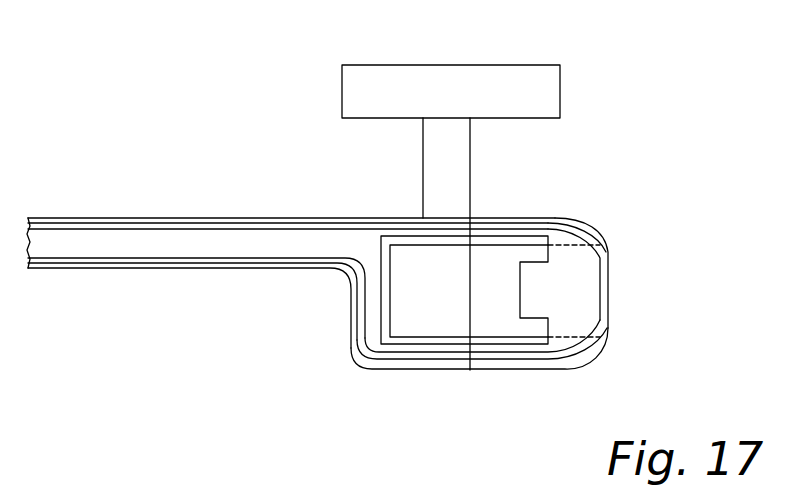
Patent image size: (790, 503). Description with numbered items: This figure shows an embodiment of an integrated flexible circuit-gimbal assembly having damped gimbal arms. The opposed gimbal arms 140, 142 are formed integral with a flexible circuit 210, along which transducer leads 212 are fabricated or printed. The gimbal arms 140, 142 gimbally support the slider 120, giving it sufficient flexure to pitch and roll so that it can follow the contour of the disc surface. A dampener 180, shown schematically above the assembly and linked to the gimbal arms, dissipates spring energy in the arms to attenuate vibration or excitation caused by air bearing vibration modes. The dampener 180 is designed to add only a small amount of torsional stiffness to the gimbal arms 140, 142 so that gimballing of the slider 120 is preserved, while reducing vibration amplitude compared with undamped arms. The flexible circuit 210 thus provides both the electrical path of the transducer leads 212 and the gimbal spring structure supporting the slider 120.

The flexible circuit 210 is at (113, 218).
The transducer leads 212 is at (240, 268).
The gimbal arm 140 is at (522, 218).
The gimbal arm 142 is at (518, 370).
The slider 120 is at (464, 290).
The dampener 180 is at (452, 64).